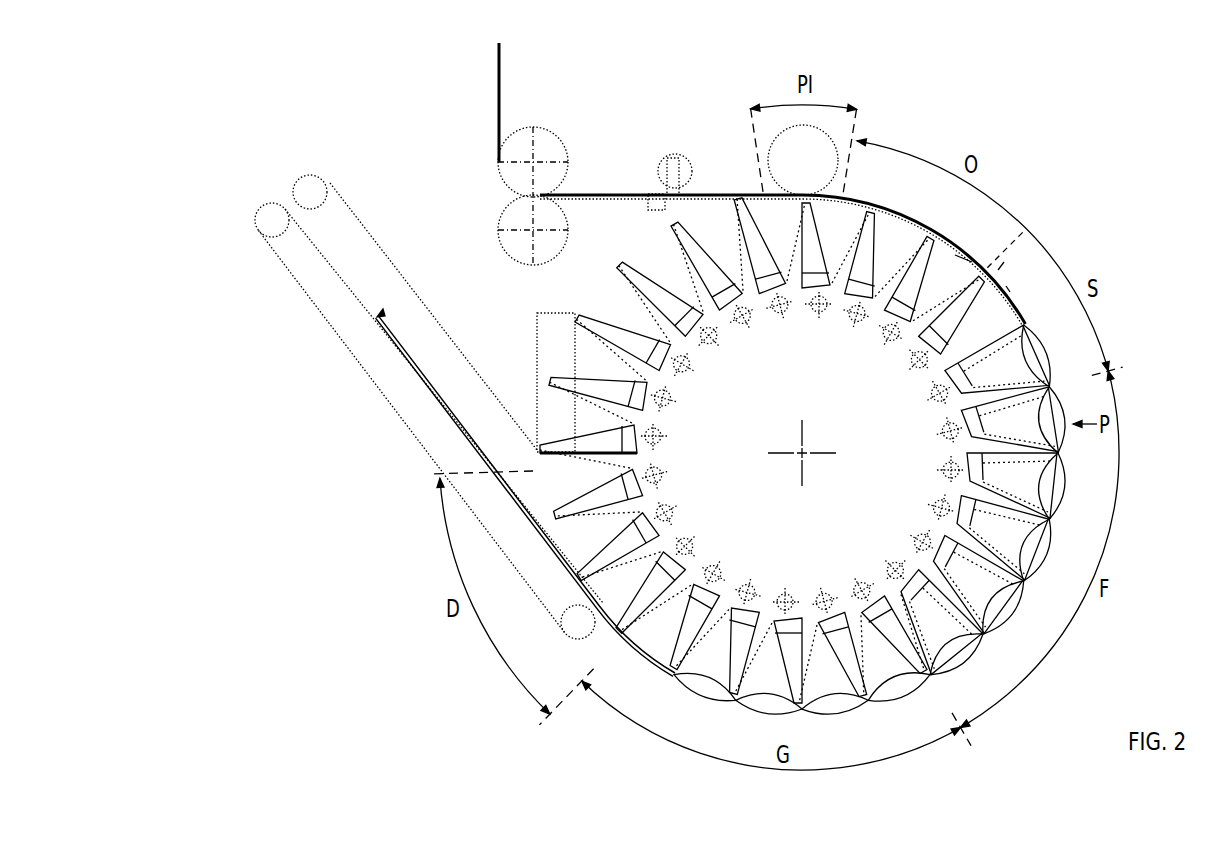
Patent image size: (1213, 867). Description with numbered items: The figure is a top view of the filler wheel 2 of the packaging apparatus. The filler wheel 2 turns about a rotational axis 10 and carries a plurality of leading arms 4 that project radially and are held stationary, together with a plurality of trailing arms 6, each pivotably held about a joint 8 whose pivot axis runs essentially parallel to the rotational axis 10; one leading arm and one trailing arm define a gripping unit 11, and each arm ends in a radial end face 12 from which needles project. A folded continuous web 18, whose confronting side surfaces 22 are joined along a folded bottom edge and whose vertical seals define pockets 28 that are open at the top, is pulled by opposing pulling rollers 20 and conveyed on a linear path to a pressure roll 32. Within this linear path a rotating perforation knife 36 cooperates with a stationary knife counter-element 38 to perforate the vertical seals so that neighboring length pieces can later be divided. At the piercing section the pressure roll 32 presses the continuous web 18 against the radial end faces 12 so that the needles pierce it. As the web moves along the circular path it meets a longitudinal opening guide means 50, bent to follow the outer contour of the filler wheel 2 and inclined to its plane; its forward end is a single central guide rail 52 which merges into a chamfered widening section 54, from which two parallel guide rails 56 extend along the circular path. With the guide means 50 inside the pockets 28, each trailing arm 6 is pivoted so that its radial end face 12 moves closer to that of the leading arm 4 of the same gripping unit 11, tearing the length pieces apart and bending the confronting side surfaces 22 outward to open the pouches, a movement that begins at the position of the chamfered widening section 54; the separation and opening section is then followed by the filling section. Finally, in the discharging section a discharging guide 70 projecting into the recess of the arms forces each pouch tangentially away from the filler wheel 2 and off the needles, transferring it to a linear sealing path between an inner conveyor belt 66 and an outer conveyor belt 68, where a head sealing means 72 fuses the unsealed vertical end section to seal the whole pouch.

The filler wheel 2 is at (773, 412).
The leading arm 4 is at (897, 603).
The trailing arm 6 is at (967, 507).
The joint 8 is at (938, 392).
The rotational axis 10 is at (805, 450).
The gripping unit 11 is at (997, 647).
The radial end face 12 is at (623, 262).
The continuous web 18 is at (501, 57).
The pulling rollers 20 is at (557, 148).
The confronting side surfaces 22 is at (1060, 490).
The pockets 28 is at (625, 191).
The pressure roll 32 is at (816, 174).
The rotating perforation knife 36 is at (673, 152).
The knife counter-element 38 is at (647, 207).
The longitudinal opening guide means 50 is at (1000, 268).
The central guide rail 52 is at (963, 257).
The chamfered widening section 54 is at (988, 265).
The parallel guide rails 56 is at (1008, 289).
The inner conveyor belt 66 is at (308, 182).
The outer conveyor belt 68 is at (265, 217).
The discharging guide 70 is at (540, 358).
The head sealing means 72 is at (428, 341).